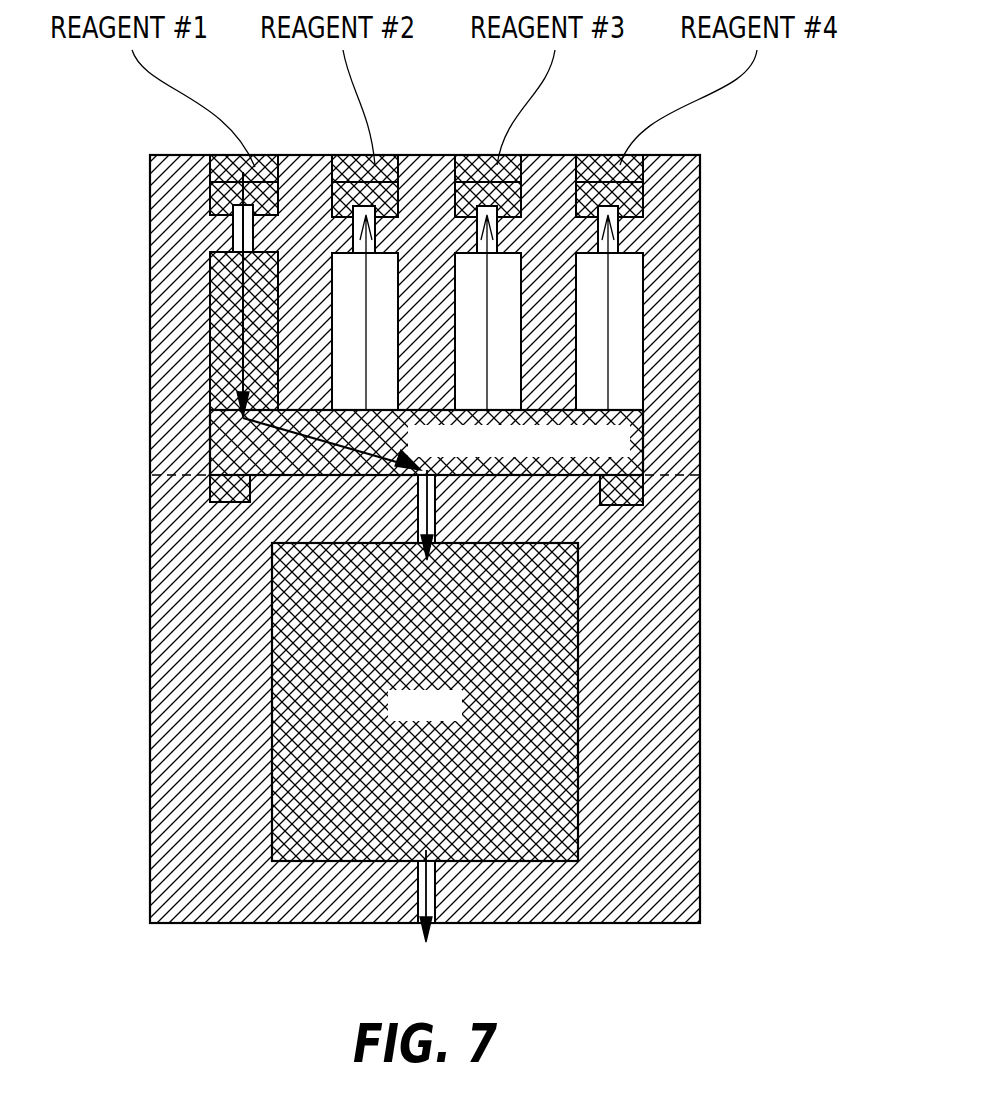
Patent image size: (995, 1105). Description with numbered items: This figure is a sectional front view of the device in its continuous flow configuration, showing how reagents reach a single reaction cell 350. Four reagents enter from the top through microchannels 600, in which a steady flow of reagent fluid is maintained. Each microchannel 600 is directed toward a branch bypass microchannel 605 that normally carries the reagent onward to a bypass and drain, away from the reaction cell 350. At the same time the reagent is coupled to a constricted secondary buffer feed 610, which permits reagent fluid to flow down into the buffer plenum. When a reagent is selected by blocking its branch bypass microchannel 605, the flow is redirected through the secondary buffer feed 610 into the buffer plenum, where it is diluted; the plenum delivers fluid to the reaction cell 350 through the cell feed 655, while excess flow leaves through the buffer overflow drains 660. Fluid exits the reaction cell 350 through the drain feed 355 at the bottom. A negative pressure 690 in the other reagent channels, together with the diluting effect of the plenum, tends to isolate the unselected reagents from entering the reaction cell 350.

The microchannel 600 is at (210, 155).
The branch bypass microchannel 605 is at (231, 213).
The constricted secondary buffer feed 610 is at (233, 235).
The buffer overflow drain 660 is at (210, 482).
The cell feed 655 is at (417, 500).
The negative pressure 690 is at (645, 298).
The reaction cell 350 is at (578, 712).
The drain feed 355 is at (417, 898).